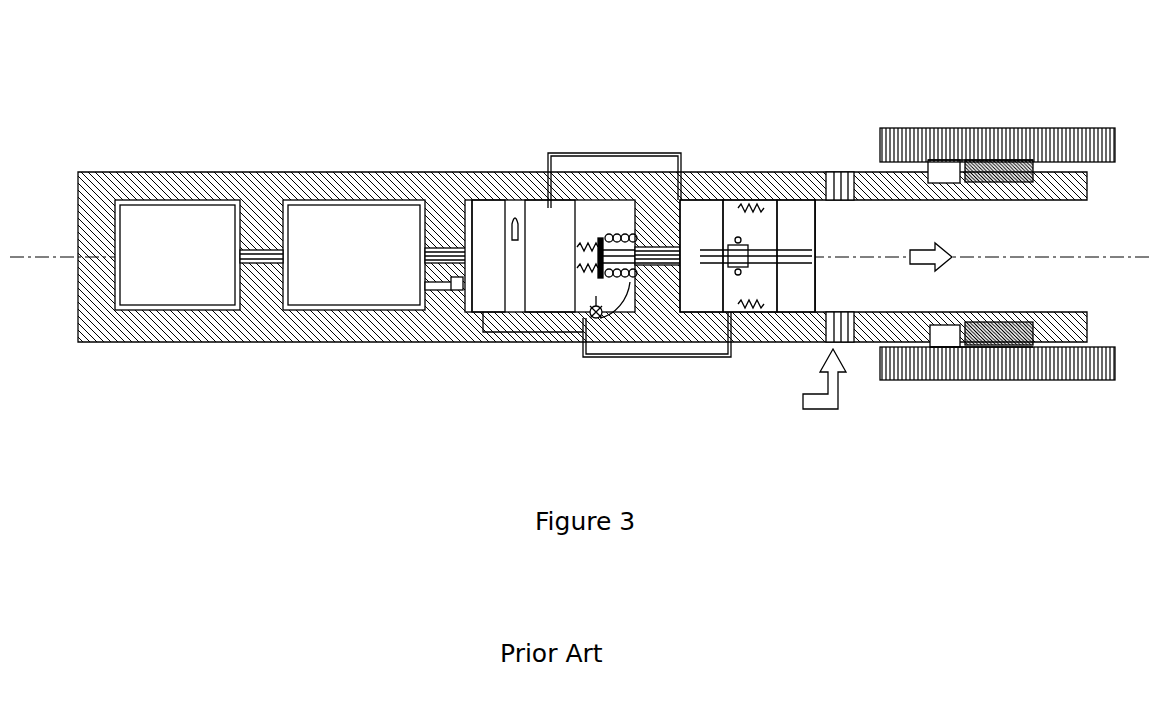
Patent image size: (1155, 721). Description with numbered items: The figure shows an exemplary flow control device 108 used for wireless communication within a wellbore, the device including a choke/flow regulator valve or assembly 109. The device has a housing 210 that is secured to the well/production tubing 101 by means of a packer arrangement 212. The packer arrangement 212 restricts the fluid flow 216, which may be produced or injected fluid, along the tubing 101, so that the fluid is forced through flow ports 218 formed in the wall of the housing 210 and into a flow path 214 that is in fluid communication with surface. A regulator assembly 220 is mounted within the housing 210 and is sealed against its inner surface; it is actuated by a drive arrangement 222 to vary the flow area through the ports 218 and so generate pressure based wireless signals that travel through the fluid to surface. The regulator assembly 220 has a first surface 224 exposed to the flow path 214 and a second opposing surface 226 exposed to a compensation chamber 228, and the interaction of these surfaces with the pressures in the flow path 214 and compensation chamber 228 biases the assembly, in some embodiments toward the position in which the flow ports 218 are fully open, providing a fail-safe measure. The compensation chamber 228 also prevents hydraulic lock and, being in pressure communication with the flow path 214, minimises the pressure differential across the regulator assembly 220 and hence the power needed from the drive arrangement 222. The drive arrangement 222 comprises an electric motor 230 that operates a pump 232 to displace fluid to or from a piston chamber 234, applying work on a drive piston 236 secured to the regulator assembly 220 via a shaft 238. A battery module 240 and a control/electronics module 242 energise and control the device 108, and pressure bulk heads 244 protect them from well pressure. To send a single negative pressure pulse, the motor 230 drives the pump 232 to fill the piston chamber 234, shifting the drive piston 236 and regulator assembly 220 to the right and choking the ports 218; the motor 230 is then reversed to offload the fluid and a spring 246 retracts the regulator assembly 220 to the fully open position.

The device 108 is at (126, 82).
The choke/flow regulator valve or assembly 109 is at (793, 134).
The well/production tubing 101 is at (1058, 125).
The packer arrangement 212 is at (973, 114).
The flow path 214 is at (1007, 223).
The fluid flow 216 is at (833, 400).
The flow ports 218 is at (846, 168).
The housing 210 is at (727, 190).
The regulator assembly 220 is at (792, 300).
The drive arrangement 222 is at (550, 356).
The first surface 224 is at (820, 222).
The second opposing surface 226 is at (778, 200).
The compensation chamber 228 is at (748, 300).
The electric motor 230 is at (485, 218).
The pump 232 is at (540, 210).
The piston chamber 234 is at (657, 200).
The drive piston 236 is at (700, 205).
The shaft 238 is at (745, 262).
The battery module 240 is at (184, 215).
The control/electronics module 242 is at (355, 215).
The pressure bulk heads 244 is at (440, 286).
The spring 246 is at (604, 342).